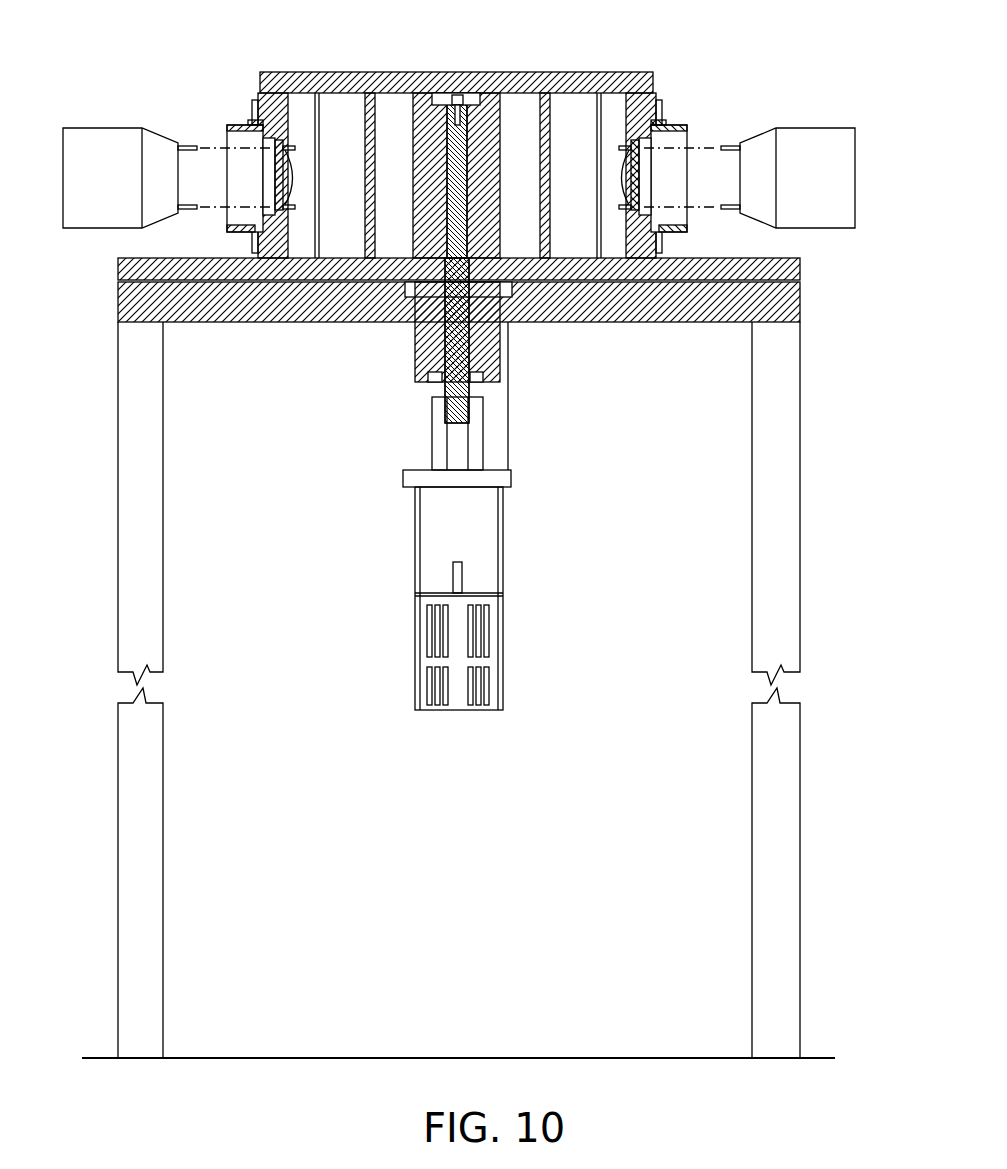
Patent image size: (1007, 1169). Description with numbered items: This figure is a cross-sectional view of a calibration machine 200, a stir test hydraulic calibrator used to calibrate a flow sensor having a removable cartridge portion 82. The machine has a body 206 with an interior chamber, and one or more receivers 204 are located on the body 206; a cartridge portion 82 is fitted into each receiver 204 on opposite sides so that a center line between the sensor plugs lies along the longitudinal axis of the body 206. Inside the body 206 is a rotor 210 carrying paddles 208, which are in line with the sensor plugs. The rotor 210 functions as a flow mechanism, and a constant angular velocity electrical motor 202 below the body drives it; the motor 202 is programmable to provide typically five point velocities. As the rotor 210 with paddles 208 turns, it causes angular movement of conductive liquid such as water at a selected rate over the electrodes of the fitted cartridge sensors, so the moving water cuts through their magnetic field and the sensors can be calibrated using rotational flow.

The calibration machine 200 is at (742, 80).
The constant angular velocity electrical motor 202 is at (504, 645).
The receiver 204 is at (237, 127).
The body 206 is at (451, 71).
The paddle 208 is at (576, 214).
The rotor 210 is at (549, 130).
The cartridge portion 82 is at (131, 128).